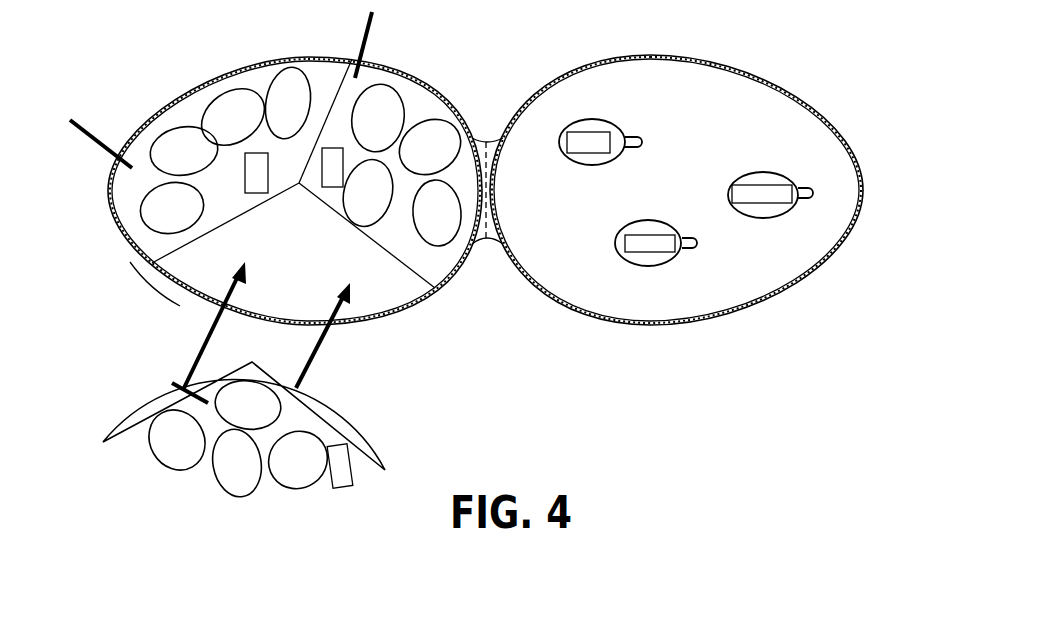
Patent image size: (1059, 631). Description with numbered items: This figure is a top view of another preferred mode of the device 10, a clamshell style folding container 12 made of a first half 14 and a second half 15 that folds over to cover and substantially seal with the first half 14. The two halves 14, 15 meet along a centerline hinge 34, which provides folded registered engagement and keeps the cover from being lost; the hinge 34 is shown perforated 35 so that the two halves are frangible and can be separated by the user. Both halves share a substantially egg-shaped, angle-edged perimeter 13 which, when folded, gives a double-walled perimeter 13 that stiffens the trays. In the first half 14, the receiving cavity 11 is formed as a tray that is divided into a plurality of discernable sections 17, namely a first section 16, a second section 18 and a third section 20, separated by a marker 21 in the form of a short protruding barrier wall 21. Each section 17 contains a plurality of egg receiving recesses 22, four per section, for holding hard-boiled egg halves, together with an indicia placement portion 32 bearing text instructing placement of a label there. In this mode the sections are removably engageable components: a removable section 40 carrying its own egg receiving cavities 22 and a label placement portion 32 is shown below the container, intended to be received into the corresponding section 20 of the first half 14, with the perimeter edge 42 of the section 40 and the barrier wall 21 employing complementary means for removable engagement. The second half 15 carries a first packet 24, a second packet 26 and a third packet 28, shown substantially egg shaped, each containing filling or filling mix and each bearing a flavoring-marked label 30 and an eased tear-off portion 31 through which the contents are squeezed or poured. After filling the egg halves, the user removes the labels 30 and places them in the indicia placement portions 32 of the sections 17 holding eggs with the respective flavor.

The device 10 is at (768, 48).
The receiving cavity 11 is at (362, 300).
The folding container 12 is at (396, 62).
The perimeter 13 is at (268, 60).
The first half 14 is at (160, 275).
The second half 15 is at (773, 295).
The first section 16 is at (192, 118).
The sections 17 is at (223, 201).
The second section 18 is at (418, 113).
The third section 20 is at (385, 295).
The marker 21 is at (150, 263).
The egg receiving recesses 22 is at (143, 208).
The first packet 24 is at (620, 128).
The second packet 26 is at (753, 173).
The third packet 28 is at (617, 243).
The label 30 is at (596, 150).
The tear-off portion 31 is at (644, 142).
The indicia placement portion 32 is at (245, 171).
The centerline hinge 34 is at (490, 138).
The perforation 35 is at (492, 224).
The removable section 40 is at (213, 484).
The perimeter edge 42 is at (150, 415).